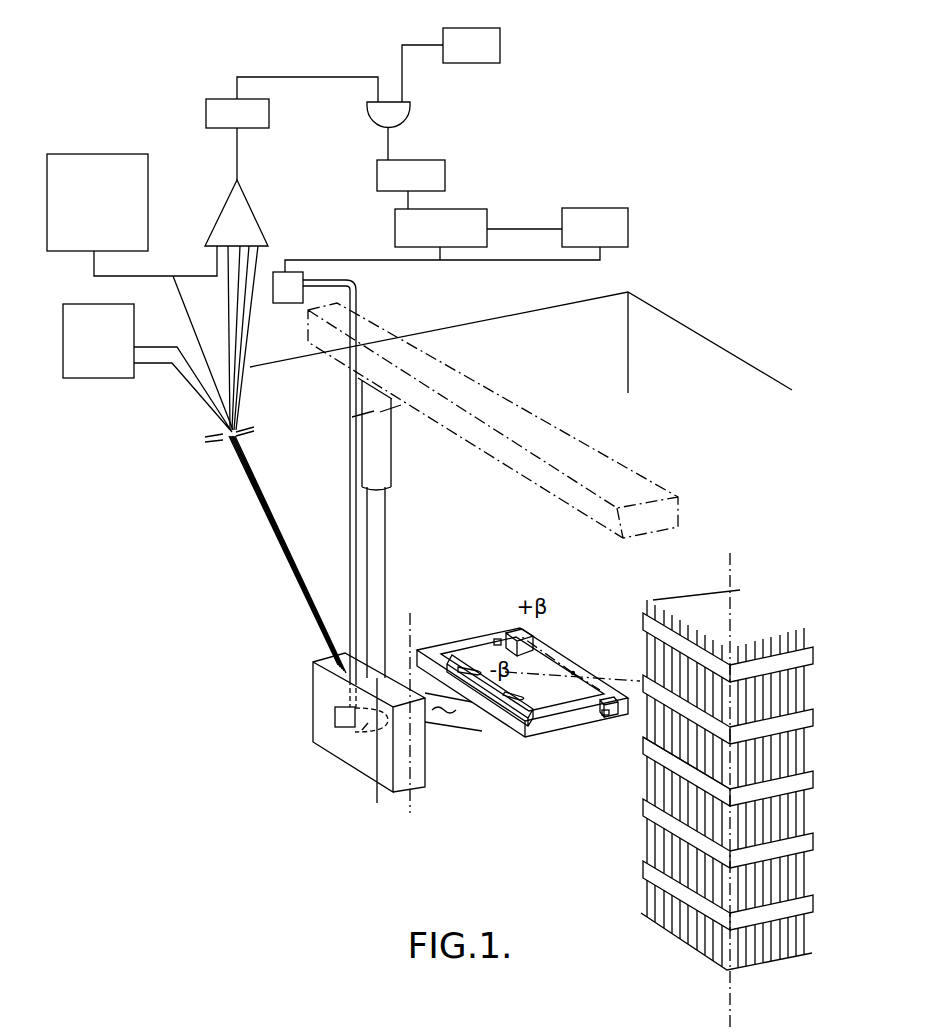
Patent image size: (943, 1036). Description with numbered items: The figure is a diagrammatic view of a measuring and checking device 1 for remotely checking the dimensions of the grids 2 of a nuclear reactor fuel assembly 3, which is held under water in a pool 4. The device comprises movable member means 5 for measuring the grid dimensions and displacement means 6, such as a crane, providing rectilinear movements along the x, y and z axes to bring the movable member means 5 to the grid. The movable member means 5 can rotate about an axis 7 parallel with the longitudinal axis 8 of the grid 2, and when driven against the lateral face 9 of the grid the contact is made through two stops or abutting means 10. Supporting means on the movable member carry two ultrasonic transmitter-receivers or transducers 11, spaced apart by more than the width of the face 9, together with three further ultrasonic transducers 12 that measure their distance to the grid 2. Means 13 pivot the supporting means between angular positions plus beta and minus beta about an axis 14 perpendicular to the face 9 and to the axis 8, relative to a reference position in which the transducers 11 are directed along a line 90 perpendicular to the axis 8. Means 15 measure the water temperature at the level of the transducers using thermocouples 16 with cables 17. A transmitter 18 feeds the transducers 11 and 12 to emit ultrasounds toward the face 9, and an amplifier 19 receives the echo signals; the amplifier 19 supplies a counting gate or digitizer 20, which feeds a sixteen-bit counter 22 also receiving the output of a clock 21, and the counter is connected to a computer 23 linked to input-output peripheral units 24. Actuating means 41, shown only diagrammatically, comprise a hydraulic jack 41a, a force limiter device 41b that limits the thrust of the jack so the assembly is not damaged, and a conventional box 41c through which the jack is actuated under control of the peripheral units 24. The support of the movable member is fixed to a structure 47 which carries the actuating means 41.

The measuring and checking device 1 is at (262, 544).
The grids 2 is at (778, 723).
The assembly 3 is at (641, 846).
The pool 4 is at (672, 343).
The movable member means 5 is at (516, 739).
The displacement means 6 is at (477, 383).
The axis 7 is at (415, 615).
The longitudinal axis 8 is at (732, 562).
The face 9 is at (668, 762).
The stops or abutting means 10 is at (472, 670).
The ultrasonic transmitter-receivers or transducers 11 is at (517, 633).
The ultrasonic transducers 12 is at (517, 717).
The means for rotating or pivoting 13 is at (434, 726).
The axis 14 is at (583, 667).
The means for measuring the temperature 15 is at (92, 350).
The thermocouples 16 is at (495, 638).
The cables 17 is at (197, 383).
The transmitter 18 is at (101, 173).
The amplifier 19 is at (232, 212).
The counting gate or digitizer 20 is at (222, 108).
The clock 21 is at (482, 44).
The sixteen-bit counter 22 is at (418, 168).
The computer 23 is at (453, 222).
The input-output peripheral units 24 is at (590, 227).
The actuating means 41 is at (346, 480).
The hydraulic jack 41a is at (362, 730).
The force limiter device 41b is at (335, 712).
The box 41c is at (282, 283).
The structure 47 is at (337, 744).
The line 90 is at (570, 667).